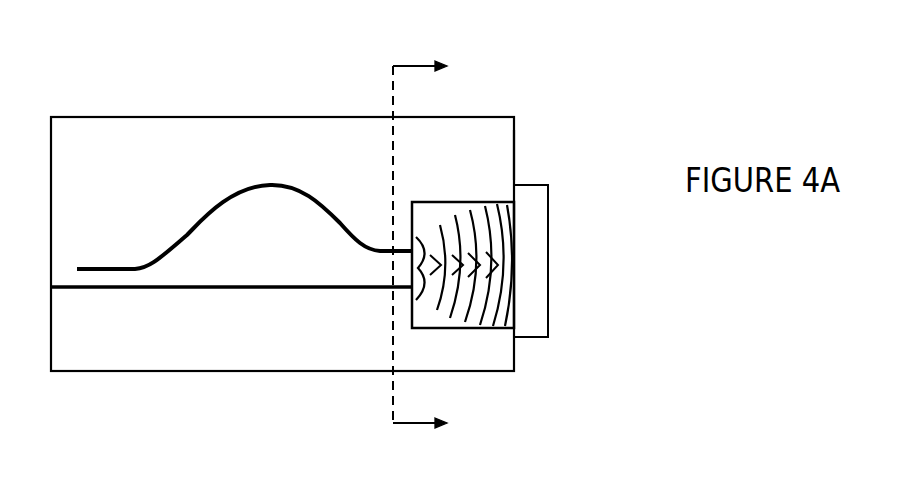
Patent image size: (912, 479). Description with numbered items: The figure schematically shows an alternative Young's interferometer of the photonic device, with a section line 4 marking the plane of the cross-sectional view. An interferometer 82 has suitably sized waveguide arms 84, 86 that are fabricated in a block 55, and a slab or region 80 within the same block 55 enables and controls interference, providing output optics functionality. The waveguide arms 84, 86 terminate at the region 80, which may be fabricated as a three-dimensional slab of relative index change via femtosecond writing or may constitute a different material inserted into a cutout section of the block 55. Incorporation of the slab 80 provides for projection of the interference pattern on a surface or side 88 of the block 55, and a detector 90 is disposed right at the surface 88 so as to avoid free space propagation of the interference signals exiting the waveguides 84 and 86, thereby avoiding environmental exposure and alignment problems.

The section line 4 is at (420, 244).
The block 55 is at (148, 118).
The slab or region 80 is at (472, 329).
The interferometer 82 is at (286, 322).
The waveguide arm 84 is at (270, 184).
The waveguide arm 86 is at (87, 289).
The surface or side 88 is at (514, 155).
The detector 90 is at (535, 338).